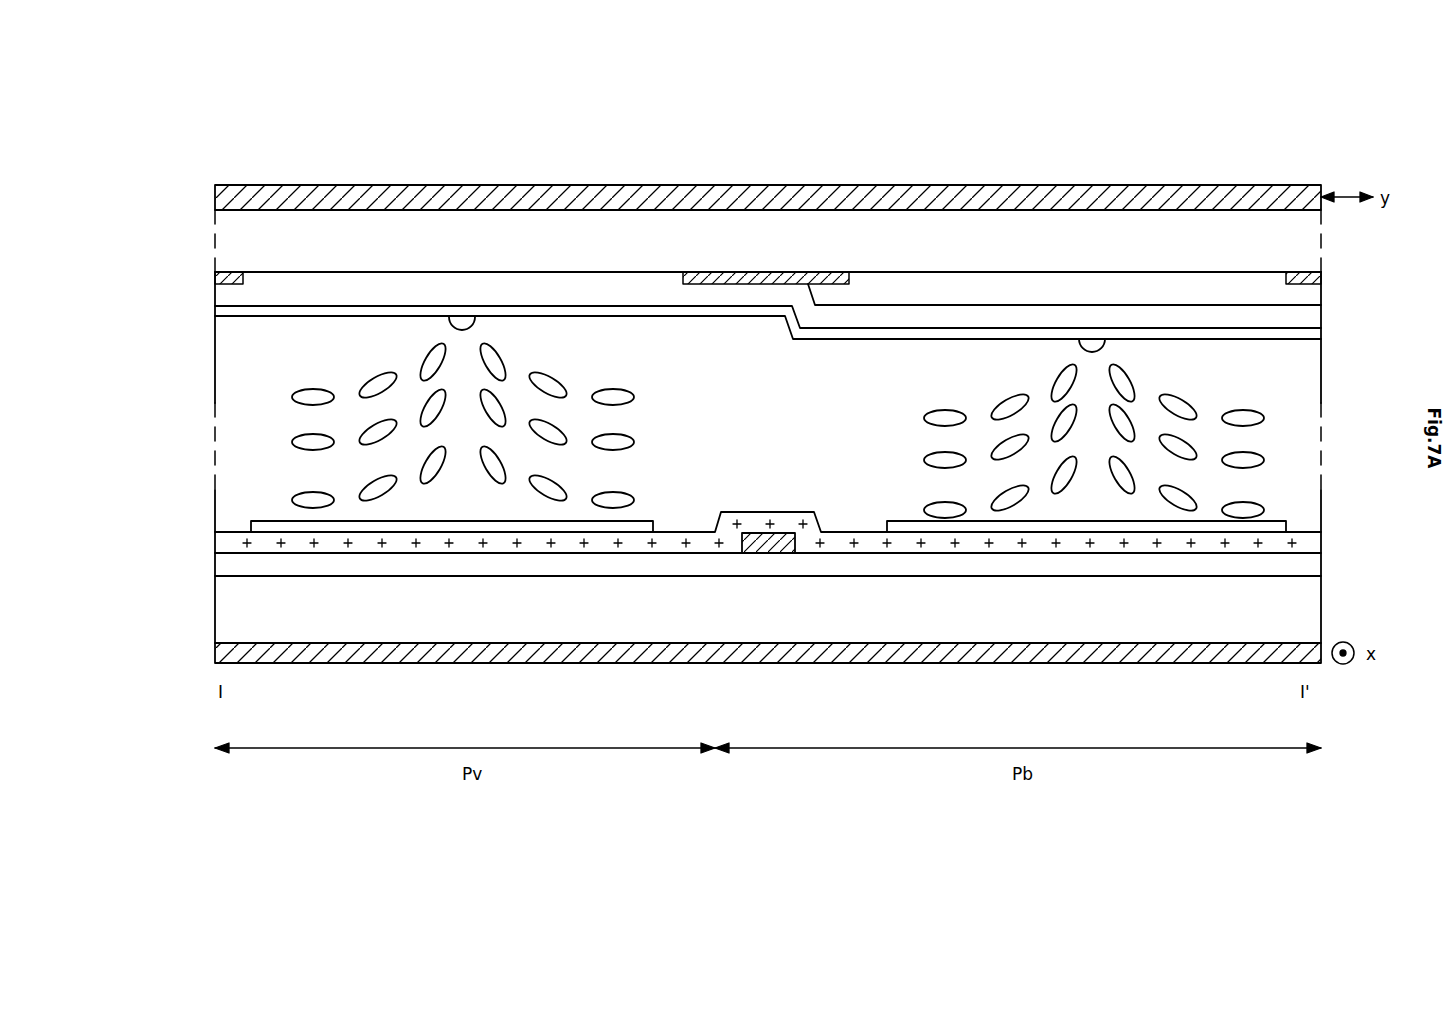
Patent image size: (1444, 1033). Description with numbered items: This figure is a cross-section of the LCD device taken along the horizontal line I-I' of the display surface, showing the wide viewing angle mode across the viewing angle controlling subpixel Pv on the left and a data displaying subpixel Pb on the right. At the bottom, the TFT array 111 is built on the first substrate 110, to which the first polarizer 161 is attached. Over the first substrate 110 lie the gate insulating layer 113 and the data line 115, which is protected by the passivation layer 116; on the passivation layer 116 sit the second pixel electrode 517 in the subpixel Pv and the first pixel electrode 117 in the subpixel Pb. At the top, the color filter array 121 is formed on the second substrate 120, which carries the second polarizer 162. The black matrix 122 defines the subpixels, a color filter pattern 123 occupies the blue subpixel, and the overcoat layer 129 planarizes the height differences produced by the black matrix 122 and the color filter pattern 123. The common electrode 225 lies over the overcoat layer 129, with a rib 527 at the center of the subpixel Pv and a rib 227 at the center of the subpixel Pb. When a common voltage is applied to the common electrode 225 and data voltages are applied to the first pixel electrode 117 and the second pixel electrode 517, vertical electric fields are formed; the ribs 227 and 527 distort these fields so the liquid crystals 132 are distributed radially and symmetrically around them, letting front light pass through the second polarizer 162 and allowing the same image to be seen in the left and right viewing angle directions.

The first substrate 110 is at (1310, 608).
The TFT array 111 is at (1340, 514).
The gate insulating layer 113 is at (222, 570).
The data line 115 is at (778, 548).
The passivation layer 116 is at (222, 545).
The first pixel electrode 117 is at (1064, 522).
The second substrate 120 is at (228, 238).
The color filter array 121 is at (1340, 149).
The black matrix 122 is at (215, 280).
The color filter pattern 123 is at (1321, 292).
The overcoat layer 129 is at (230, 306).
The liquid crystals 132 is at (292, 441).
The first polarizer 161 is at (222, 655).
The second polarizer 162 is at (218, 200).
The common electrode 225 is at (222, 318).
The rib 227 is at (1093, 340).
The second pixel electrode 517 is at (450, 521).
The rib 527 is at (462, 318).